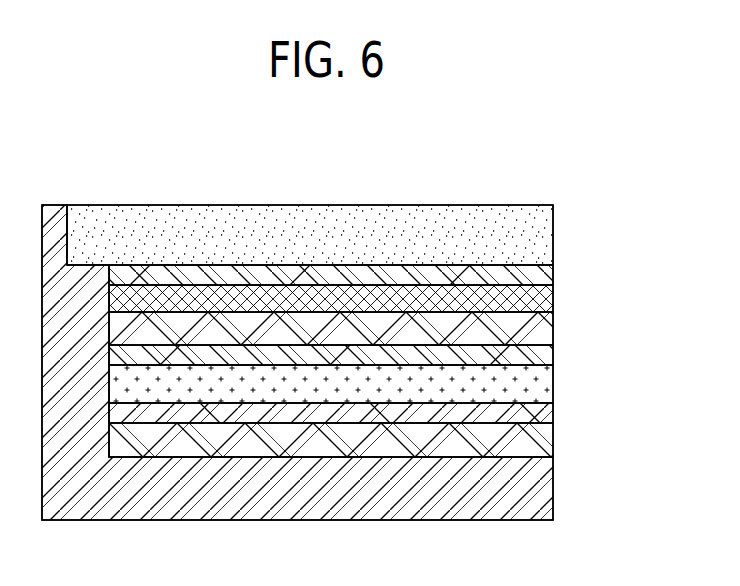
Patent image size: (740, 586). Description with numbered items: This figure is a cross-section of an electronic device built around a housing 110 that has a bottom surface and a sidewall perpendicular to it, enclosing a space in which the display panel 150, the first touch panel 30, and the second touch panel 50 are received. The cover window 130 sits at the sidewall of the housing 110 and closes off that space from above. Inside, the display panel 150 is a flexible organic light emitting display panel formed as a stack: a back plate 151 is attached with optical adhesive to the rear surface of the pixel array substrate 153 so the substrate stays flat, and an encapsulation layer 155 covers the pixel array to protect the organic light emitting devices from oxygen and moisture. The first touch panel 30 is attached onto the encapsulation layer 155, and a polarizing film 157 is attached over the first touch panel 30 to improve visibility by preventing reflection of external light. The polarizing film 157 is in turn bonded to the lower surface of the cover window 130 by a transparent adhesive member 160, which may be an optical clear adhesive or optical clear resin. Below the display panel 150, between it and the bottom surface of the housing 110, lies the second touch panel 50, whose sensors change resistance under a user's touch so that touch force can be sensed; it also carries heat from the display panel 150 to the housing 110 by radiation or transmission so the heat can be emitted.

The first touch panel 30 is at (380, 327).
The second touch panel 50 is at (540, 440).
The housing 110 is at (540, 488).
The cover window 130 is at (540, 236).
The display panel 150 is at (401, 293).
The back plate 151 is at (372, 416).
The pixel array substrate 153 is at (540, 386).
The encapsulation layer 155 is at (540, 357).
The polarizing film 157 is at (540, 300).
The transparent adhesive member 160 is at (540, 277).